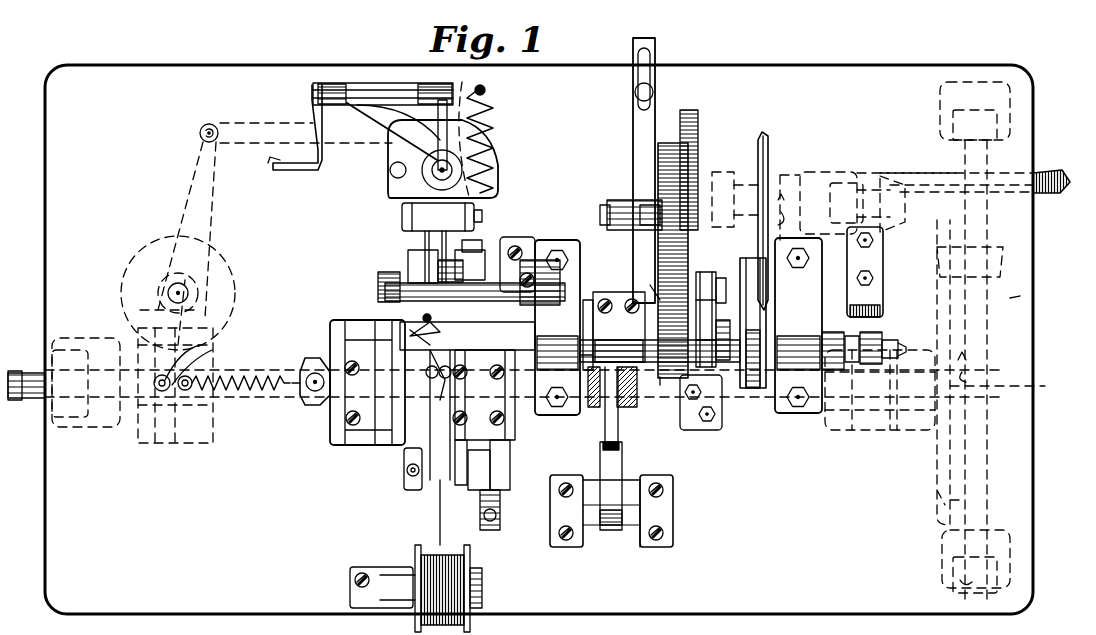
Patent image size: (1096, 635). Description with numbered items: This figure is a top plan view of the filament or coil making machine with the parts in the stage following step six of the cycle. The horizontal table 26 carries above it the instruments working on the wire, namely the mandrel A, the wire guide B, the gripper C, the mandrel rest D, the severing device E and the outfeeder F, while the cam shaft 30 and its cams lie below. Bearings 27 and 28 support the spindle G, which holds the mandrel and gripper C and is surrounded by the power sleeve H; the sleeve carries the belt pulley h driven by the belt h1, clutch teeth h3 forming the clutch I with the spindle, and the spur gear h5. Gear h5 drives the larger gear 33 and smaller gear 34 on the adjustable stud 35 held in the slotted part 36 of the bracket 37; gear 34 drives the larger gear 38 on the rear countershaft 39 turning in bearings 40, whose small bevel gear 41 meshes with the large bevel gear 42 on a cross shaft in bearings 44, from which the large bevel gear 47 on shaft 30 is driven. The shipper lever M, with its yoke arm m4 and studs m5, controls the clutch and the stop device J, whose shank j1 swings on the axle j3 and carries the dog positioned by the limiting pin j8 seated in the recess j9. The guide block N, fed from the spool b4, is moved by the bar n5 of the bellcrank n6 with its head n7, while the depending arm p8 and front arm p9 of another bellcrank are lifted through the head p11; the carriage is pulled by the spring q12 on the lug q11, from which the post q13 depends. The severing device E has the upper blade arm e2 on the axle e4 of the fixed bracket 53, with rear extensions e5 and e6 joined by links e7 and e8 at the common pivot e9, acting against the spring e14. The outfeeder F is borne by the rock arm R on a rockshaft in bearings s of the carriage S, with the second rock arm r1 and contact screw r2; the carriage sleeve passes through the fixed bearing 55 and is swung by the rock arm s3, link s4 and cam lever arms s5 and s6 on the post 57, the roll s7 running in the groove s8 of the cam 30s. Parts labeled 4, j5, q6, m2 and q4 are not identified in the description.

The table 26 is at (539, 339).
The cam shaft 30 is at (22, 405).
The depending bracket or post 57 is at (135, 260).
The long longitudinal link s4 is at (242, 118).
The rear arm of cam lever s5 is at (182, 190).
The front arm of cam lever s6 is at (140, 312).
The follower or roll s7 is at (145, 410).
The cam groove s8 is at (168, 430).
The cam or disk 30s is at (203, 440).
The spring q12 is at (245, 378).
The projecting lug q11 is at (318, 348).
The post q13 is at (313, 397).
The mandrel rest D is at (425, 322).
The severing device E is at (430, 345).
The wire guide B is at (440, 360).
The upper swinging arm e2 is at (440, 332).
The mandrel A is at (468, 300).
The upper link e7 is at (420, 236).
The rear extension of upper blade arm e5 is at (408, 268).
The common axle e4 is at (380, 290).
The rear extension of lower blade arm e6 is at (448, 282).
The lower link e8 is at (470, 265).
The common pivot e9 is at (475, 244).
The fixed bracket 53 is at (522, 216).
The gripper C is at (518, 245).
The bearings s is at (350, 70).
The second rock arm r1 is at (380, 95).
The adjustable contact screw r2 is at (415, 135).
The outfeeder carrier R is at (312, 105).
The carriage S is at (393, 107).
The outfeeder F is at (280, 172).
The fixed bearing 55 is at (498, 160).
The pivot 4 is at (435, 172).
The spring e14 is at (485, 110).
The rearwardly extending rock arm s3 is at (468, 132).
The ball bearing 27 is at (557, 327).
The member j5 is at (582, 354).
The spindle G is at (587, 300).
The clutch I is at (625, 262).
The member q6 is at (640, 300).
The bracket 37 is at (633, 145).
The short axle or stud 35 is at (625, 205).
The slotted part 36 is at (645, 212).
The larger gear 38 is at (710, 108).
The larger gear 33 is at (672, 145).
The smaller gear 34 is at (720, 172).
The spur gear h5 is at (668, 280).
The clutch teeth h3 is at (665, 372).
The shipper lever M is at (700, 272).
The upwardly extending arm m4 is at (714, 280).
The pins or studs m5 is at (714, 322).
The power sleeve H is at (750, 388).
The belt pulley h is at (755, 388).
The bracket m2 is at (712, 430).
The right hand bearing 28 is at (798, 325).
The belt h1 is at (765, 135).
The bearings 40 is at (835, 172).
The rear countershaft 39 is at (800, 180).
The small bevel gear 41 is at (880, 176).
The large bevel gear 42 is at (1040, 172).
The bearings 44 is at (940, 545).
The large bevel gear 47 is at (990, 478).
The stop device J is at (600, 440).
The limiting pin j8 is at (622, 448).
The recess j9 is at (600, 465).
The shank j1 is at (640, 468).
The horizontal fulcrum or axle j3 is at (605, 528).
The block or support N is at (432, 447).
The bellcrank lever n6 is at (404, 460).
The head n7 is at (404, 482).
The bar n5 is at (453, 462).
The depending arm p8 is at (490, 455).
The member q4 is at (510, 462).
The front arm p9 is at (500, 502).
The adjustable head p11 is at (496, 518).
The supply or spool b4 is at (470, 560).